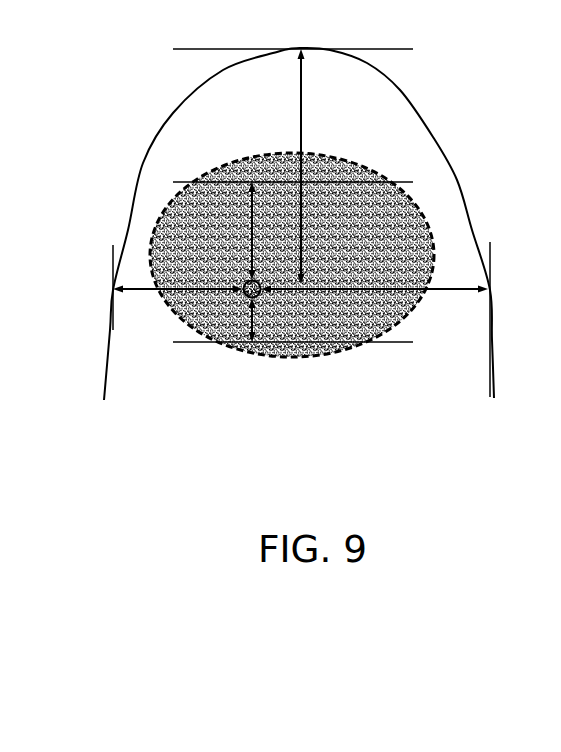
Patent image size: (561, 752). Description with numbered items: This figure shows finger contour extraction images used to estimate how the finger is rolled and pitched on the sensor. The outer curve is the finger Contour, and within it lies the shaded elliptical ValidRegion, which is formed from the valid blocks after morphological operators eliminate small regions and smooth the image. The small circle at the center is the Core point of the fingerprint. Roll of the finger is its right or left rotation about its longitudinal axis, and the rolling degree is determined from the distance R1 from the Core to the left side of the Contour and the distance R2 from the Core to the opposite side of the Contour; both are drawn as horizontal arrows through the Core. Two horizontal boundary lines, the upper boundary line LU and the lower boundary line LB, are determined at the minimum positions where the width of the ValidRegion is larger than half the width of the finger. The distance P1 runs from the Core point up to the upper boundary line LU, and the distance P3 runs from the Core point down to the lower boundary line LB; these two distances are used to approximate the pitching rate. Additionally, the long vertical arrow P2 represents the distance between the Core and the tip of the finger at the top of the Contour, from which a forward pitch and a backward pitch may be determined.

The contour Contour is at (310, 224).
The valid region ValidRegion is at (312, 272).
The upper boundary line LU is at (300, 170).
The lower boundary line LB is at (305, 329).
The distance from core point to upper boundary line P1 is at (241, 231).
The distance between core and tip of finger P2 is at (286, 166).
The distance from core point to lower boundary line P3 is at (238, 320).
The distance from core to left side of contour R1 is at (178, 279).
The distance from core to right side of contour R2 is at (374, 279).
The core Core is at (285, 303).